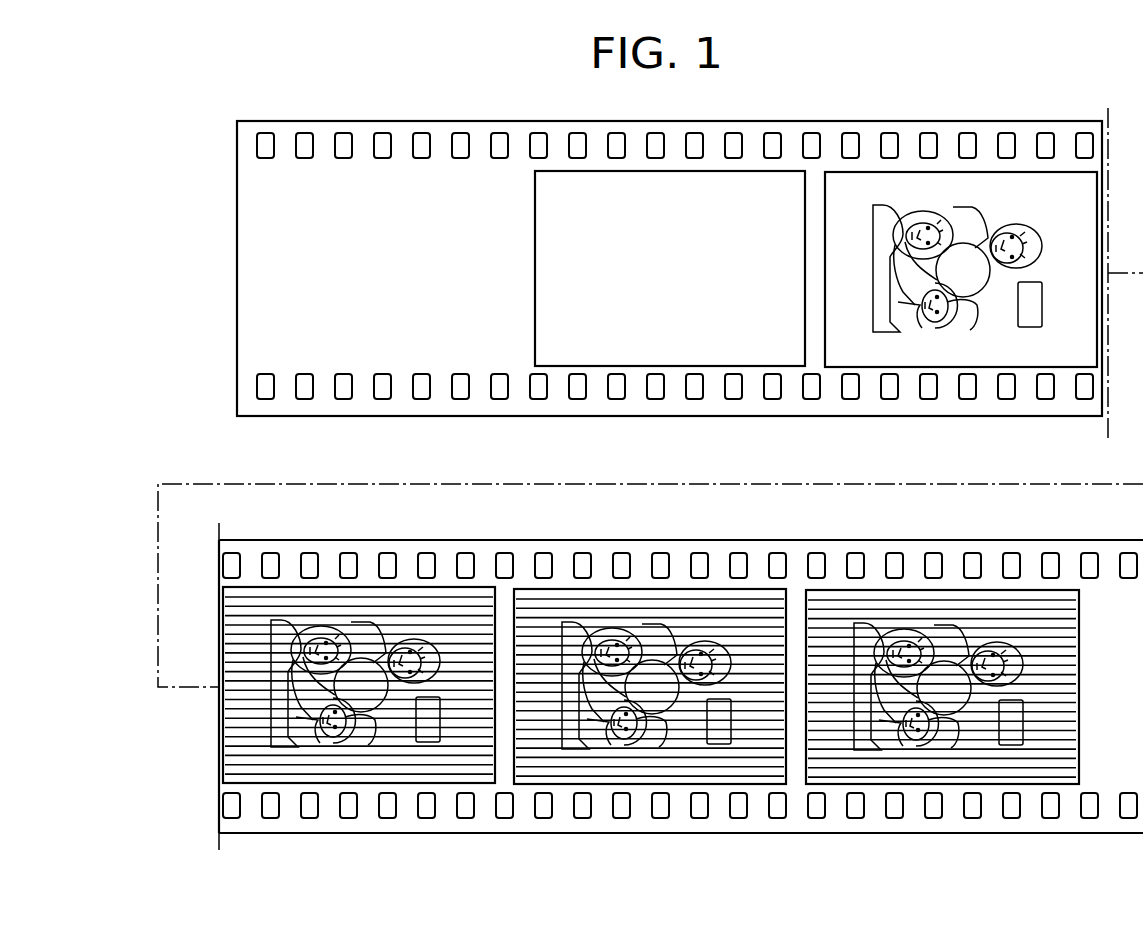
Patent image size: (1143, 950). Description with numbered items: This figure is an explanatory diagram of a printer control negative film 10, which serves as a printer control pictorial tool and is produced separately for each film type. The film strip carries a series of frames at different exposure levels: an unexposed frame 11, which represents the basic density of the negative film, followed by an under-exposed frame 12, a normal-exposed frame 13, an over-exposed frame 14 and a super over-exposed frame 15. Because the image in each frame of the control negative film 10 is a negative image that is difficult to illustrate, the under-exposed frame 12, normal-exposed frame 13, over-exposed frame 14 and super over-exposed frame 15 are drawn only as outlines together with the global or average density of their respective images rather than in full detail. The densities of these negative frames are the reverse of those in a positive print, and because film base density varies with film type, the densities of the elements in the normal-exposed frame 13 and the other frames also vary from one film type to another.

The printer control negative film 10 is at (438, 119).
The unexposed frame 11 is at (712, 367).
The under-exposed frame 12 is at (984, 369).
The normal-exposed frame 13 is at (405, 785).
The over-exposed frame 14 is at (682, 786).
The super over-exposed frame 15 is at (995, 787).